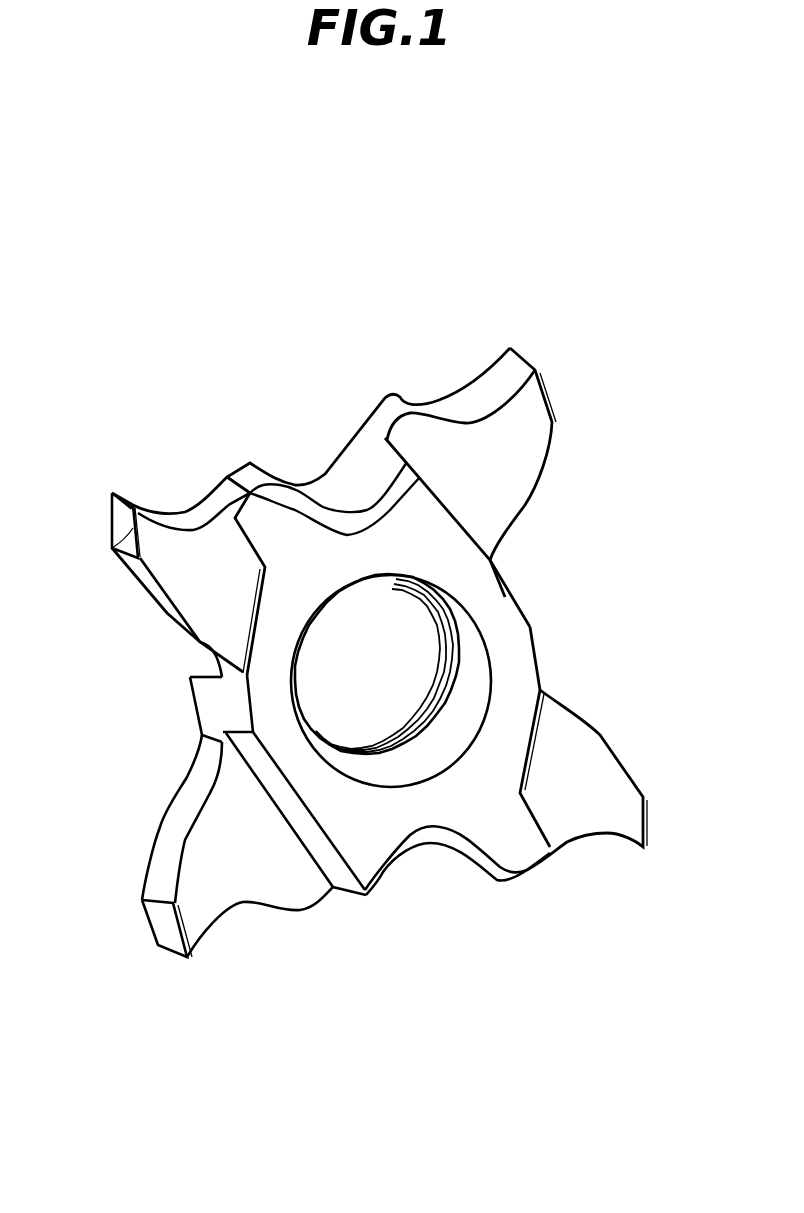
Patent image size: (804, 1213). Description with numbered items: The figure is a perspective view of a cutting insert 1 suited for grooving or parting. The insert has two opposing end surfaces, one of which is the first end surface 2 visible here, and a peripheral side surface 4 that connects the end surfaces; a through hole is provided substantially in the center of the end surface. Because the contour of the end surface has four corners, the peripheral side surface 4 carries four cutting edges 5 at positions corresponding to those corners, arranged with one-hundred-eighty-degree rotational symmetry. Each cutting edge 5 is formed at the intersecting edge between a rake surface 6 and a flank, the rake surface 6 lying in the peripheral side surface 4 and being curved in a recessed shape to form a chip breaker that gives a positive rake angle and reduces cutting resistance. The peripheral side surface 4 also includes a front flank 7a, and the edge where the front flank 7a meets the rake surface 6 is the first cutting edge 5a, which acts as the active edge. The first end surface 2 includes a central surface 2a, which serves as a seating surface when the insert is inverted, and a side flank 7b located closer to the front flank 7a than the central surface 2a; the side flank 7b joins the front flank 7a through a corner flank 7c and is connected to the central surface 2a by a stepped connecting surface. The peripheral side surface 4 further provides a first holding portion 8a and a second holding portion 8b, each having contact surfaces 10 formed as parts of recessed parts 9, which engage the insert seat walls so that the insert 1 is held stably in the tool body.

The cutting insert 1 is at (595, 425).
The first end surface 2 is at (460, 578).
The central surface 2a is at (508, 700).
The peripheral side surface 4 is at (357, 463).
The cutting edge 5 is at (135, 506).
The first cutting edge 5a is at (127, 498).
The rake surface 6 is at (158, 520).
The front flank 7a is at (120, 523).
The side flank 7b is at (170, 560).
The corner flank 7c is at (113, 553).
The first holding portion 8a is at (386, 872).
The second holding portion 8b is at (320, 483).
The recessed part 9 is at (340, 463).
The contact surface 10 is at (375, 455).